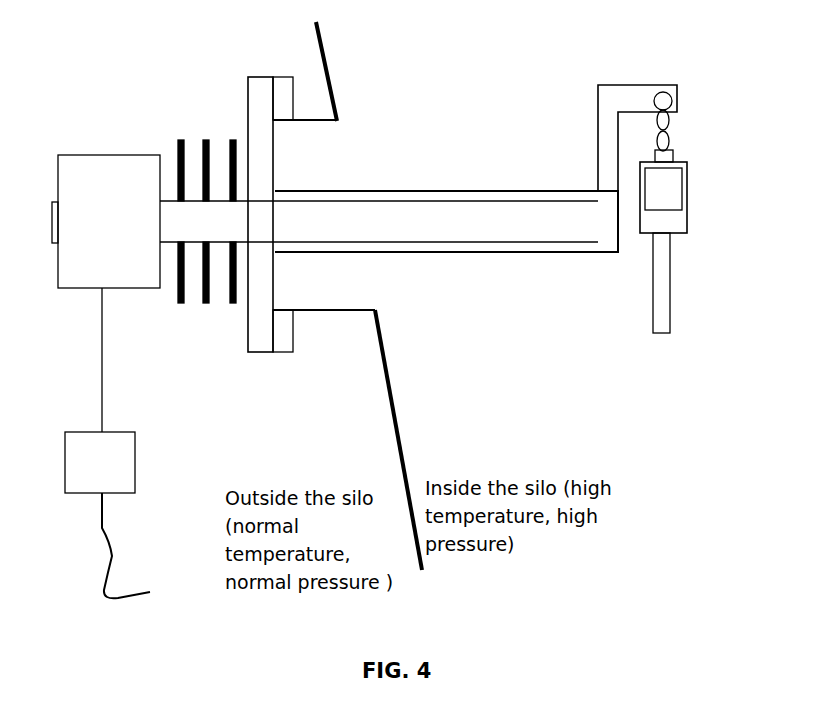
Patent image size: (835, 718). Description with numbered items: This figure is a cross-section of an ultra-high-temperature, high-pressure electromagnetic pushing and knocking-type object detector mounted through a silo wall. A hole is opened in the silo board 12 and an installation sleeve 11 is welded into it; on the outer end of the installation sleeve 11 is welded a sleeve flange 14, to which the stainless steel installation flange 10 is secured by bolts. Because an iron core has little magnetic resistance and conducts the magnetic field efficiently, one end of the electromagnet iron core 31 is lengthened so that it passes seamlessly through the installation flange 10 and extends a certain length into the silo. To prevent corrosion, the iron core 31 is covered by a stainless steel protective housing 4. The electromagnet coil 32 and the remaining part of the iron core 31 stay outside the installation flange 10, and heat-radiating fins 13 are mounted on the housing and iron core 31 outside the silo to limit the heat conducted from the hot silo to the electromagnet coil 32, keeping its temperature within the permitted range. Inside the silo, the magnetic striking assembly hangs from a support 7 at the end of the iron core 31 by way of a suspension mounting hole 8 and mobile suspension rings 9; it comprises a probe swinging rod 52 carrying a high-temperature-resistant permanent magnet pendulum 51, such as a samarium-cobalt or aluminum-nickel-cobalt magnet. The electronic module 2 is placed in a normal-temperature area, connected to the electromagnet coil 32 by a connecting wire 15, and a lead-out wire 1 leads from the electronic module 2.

The lead-out wire 1 is at (94, 545).
The electronic module 2 is at (77, 456).
The housing 4 is at (446, 186).
The support 7 is at (605, 116).
The suspension mounting hole 8 is at (697, 71).
The mobile suspension rings 9 is at (698, 121).
The installation flange 10 is at (280, 207).
The installation sleeve 11 is at (336, 440).
The silo board 12 is at (300, 70).
The heat-radiating fins 13 is at (189, 199).
The sleeve flange 14 is at (261, 353).
The connecting wire 15 is at (70, 360).
The electromagnet iron core 31 is at (379, 188).
The electromagnet coil 32 is at (106, 195).
The permanent magnet pendulum 51 is at (694, 194).
The probe swinging rod 52 is at (699, 225).